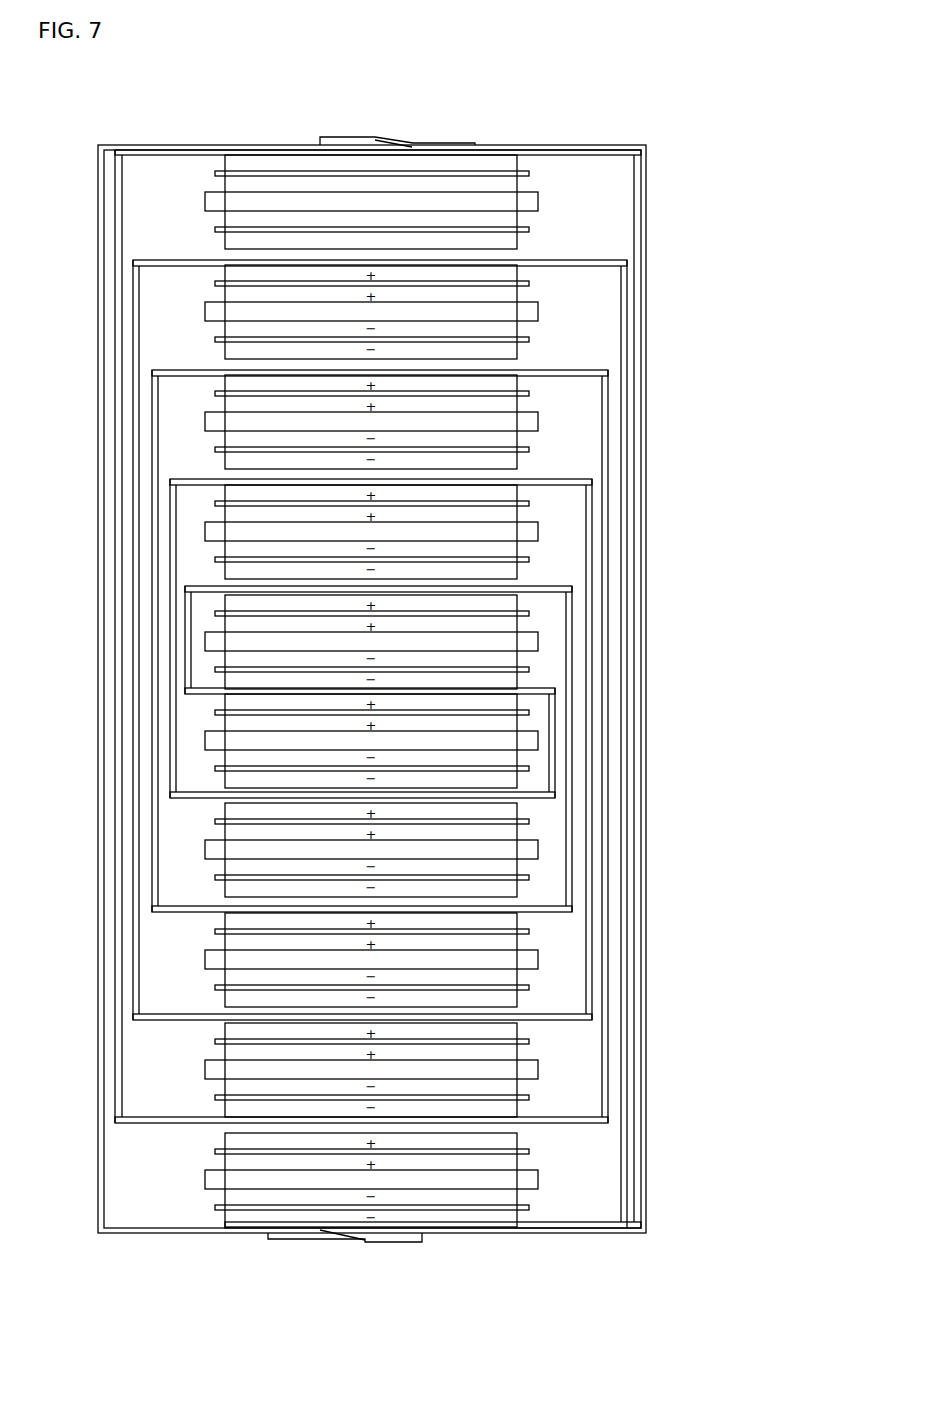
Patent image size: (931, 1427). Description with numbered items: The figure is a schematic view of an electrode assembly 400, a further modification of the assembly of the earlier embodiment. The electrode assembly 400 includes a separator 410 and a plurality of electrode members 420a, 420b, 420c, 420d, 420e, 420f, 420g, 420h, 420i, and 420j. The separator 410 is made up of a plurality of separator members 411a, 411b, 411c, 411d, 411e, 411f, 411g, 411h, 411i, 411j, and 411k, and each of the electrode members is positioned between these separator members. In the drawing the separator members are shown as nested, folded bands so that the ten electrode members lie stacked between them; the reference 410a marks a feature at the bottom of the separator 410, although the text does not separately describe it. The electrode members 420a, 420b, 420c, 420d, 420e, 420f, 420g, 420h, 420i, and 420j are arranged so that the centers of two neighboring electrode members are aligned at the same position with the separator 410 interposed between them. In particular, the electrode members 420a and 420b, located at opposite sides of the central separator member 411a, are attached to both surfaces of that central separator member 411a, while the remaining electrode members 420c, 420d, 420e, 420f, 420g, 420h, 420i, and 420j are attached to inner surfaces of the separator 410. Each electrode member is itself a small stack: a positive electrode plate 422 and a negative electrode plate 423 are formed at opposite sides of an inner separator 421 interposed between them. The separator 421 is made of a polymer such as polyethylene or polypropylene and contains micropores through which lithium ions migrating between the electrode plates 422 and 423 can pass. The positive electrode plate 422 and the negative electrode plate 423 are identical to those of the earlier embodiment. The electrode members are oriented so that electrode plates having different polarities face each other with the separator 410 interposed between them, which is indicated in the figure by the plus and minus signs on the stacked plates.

The electrode assembly 400 is at (63, 104).
The separator 410 is at (598, 150).
The case bottom tab 410a is at (173, 1224).
The central separator member 411a is at (220, 704).
The separator member 411b is at (192, 804).
The separator member 411c is at (177, 480).
The separator member 411d is at (156, 1020).
The separator member 411e is at (141, 262).
The separator member 411f is at (128, 1234).
The separator member 411g is at (192, 582).
The separator member 411h is at (176, 912).
The separator member 411i is at (159, 372).
The separator member 411j is at (138, 1125).
The separator member 411k is at (133, 150).
The electrode member 420a is at (458, 642).
The electrode member 420b is at (458, 741).
The electrode member 420c is at (457, 850).
The electrode member 420d is at (458, 422).
The electrode member 420e is at (458, 1070).
The electrode member 420f is at (428, 177).
The electrode member 420g is at (458, 532).
The electrode member 420h is at (458, 960).
The electrode member 420i is at (455, 312).
The electrode member 420j is at (455, 1180).
The separator 421 is at (203, 192).
The positive electrode plate 422 is at (224, 156).
The negative electrode plate 423 is at (225, 216).